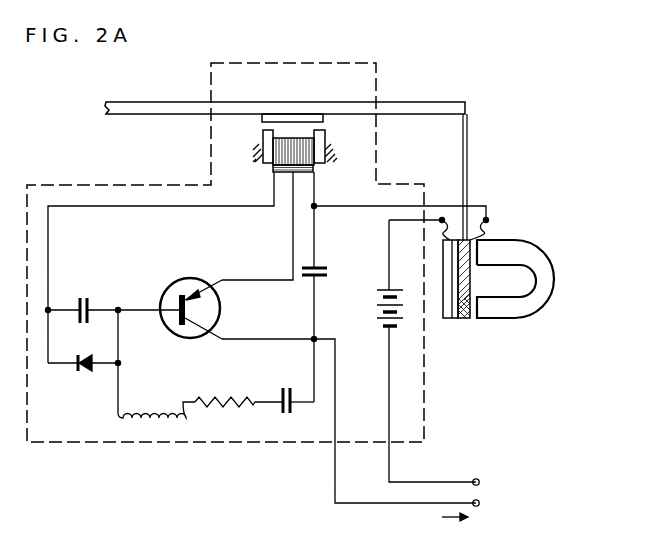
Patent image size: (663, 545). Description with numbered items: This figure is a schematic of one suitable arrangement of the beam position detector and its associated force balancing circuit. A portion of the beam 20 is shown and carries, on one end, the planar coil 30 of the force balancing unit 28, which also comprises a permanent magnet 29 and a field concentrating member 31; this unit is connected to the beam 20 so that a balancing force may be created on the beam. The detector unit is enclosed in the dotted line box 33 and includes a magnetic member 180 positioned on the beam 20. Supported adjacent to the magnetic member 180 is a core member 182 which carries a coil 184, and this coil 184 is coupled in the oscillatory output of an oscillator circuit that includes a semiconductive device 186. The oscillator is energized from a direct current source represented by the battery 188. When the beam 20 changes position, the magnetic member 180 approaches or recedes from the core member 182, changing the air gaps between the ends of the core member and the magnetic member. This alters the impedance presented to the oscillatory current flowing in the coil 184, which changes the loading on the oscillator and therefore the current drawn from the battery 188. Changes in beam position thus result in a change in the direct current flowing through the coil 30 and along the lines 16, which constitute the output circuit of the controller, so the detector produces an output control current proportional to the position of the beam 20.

The lines 16 is at (447, 503).
The beam 20 is at (427, 104).
The force balancing unit 28 is at (545, 244).
The permanent magnet 29 is at (547, 274).
The planar coil 30 is at (464, 318).
The field concentrating member 31 is at (447, 320).
The beam position detector 33 is at (204, 443).
The magnetic member 180 is at (305, 120).
The core member 182 is at (263, 140).
The coil 184 is at (305, 160).
The semiconductive device 186 is at (185, 281).
The battery 188 is at (378, 309).